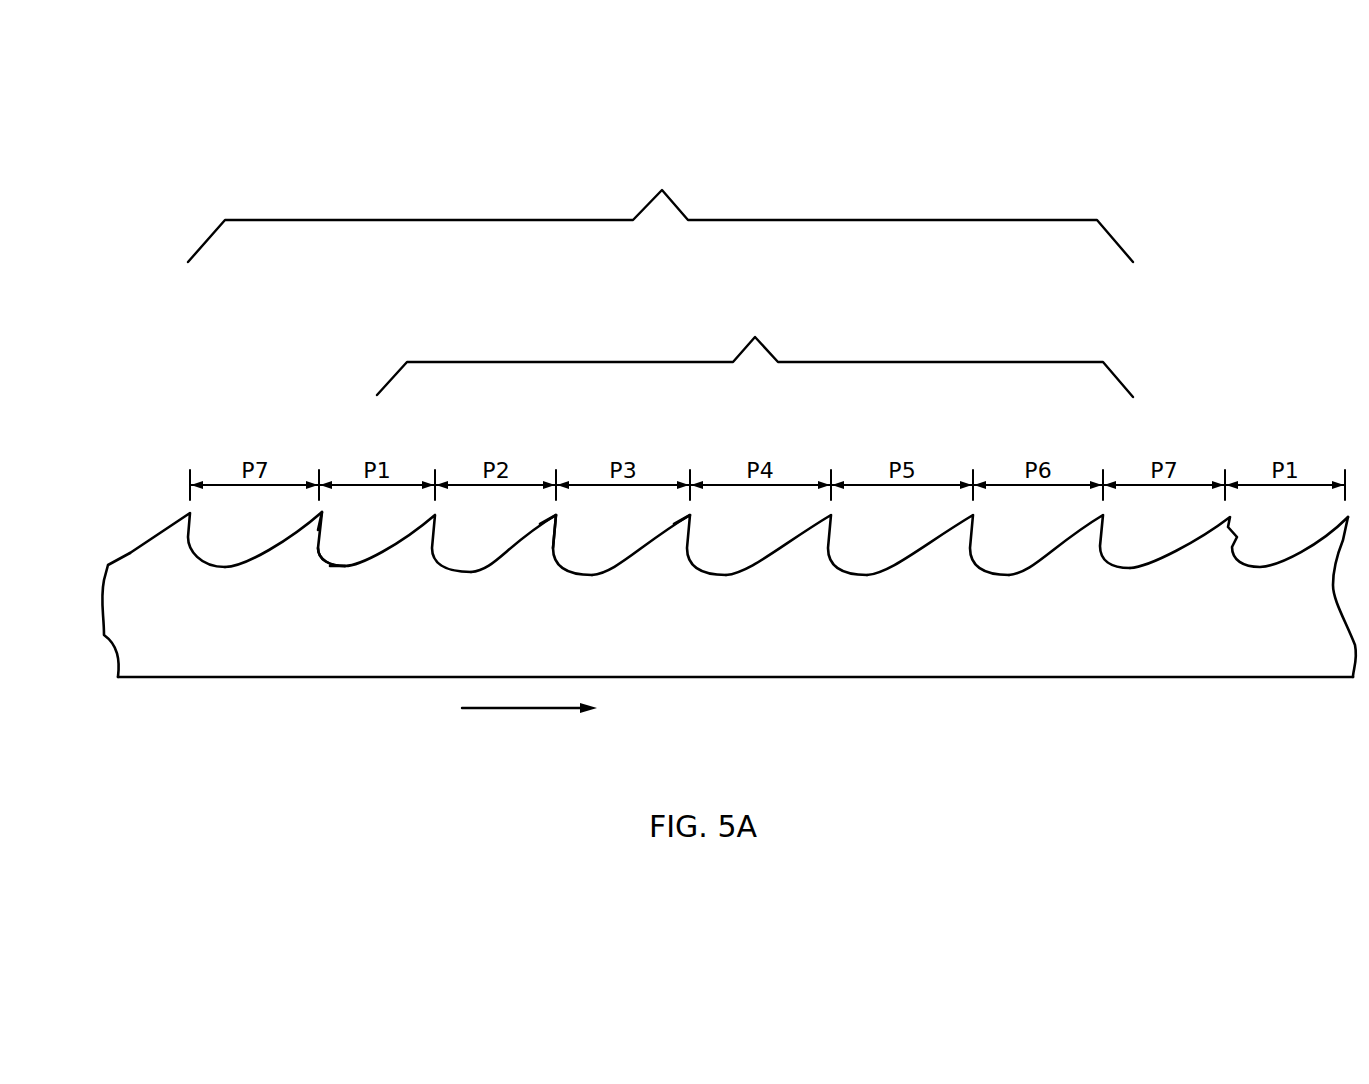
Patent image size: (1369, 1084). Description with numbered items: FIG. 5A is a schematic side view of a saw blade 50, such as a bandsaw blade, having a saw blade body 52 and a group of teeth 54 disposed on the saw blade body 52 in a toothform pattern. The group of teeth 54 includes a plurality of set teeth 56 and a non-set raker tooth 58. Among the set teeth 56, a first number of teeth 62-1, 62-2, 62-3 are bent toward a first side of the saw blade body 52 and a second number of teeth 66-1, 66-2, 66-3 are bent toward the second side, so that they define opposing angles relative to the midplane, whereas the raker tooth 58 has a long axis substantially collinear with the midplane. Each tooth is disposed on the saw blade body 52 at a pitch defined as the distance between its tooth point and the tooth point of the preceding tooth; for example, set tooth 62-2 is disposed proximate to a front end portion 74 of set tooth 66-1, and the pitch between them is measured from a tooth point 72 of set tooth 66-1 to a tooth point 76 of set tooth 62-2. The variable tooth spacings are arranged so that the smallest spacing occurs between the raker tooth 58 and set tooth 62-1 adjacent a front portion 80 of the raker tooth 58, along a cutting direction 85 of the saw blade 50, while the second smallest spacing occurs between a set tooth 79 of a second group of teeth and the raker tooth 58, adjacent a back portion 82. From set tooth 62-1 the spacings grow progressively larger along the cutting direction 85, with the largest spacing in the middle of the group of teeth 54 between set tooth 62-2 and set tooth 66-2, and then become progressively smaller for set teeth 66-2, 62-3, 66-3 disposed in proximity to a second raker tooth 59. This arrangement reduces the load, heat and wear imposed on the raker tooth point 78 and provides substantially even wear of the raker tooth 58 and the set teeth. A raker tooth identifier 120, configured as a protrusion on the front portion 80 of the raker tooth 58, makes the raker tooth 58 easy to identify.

The saw blade 50 is at (1214, 318).
The saw blade body 52 is at (1192, 677).
The group of teeth 54 is at (660, 211).
The set teeth 56 is at (755, 351).
The raker tooth 58 is at (297, 520).
The second raker tooth 59 is at (1210, 522).
The set tooth 62-1 is at (408, 547).
The set tooth 62-2 is at (659, 547).
The set tooth 62-3 is at (938, 547).
The set tooth 66-1 is at (531, 547).
The set tooth 66-2 is at (796, 547).
The set tooth 66-3 is at (1069, 547).
The tooth point 72 is at (565, 522).
The front end portion 74 is at (556, 540).
The tooth point 76 is at (697, 522).
The raker tooth point 78 is at (328, 517).
The set tooth 79 is at (130, 553).
The front portion 80 is at (352, 528).
The back portion 82 is at (262, 532).
The cutting direction 85 is at (527, 708).
The raker tooth identifier 120 is at (342, 567).